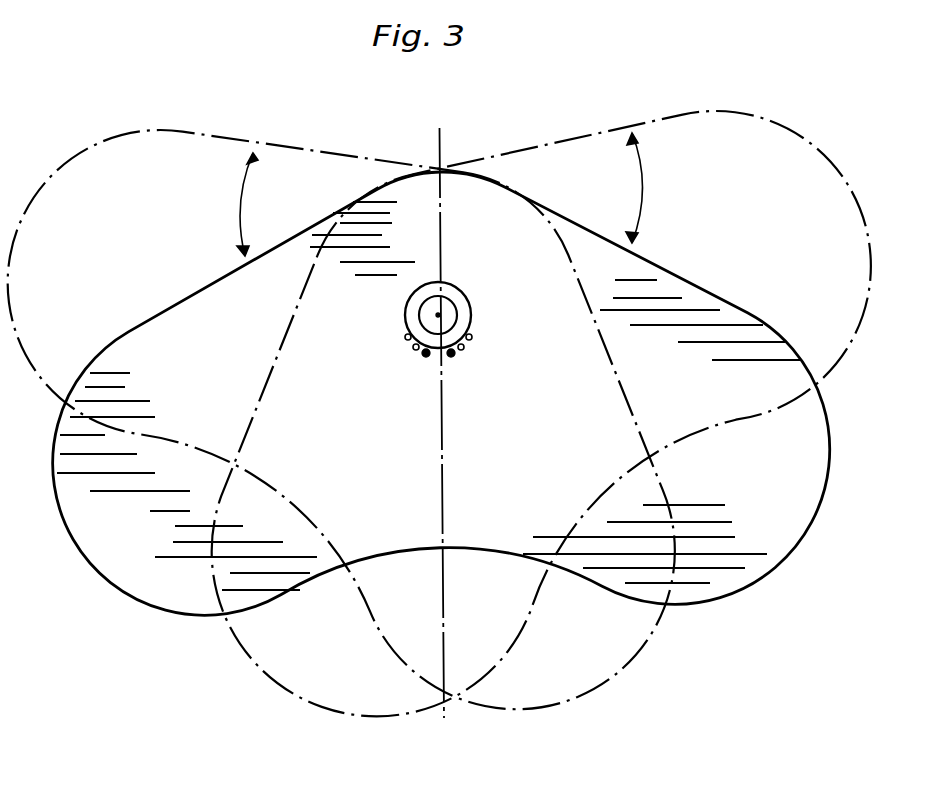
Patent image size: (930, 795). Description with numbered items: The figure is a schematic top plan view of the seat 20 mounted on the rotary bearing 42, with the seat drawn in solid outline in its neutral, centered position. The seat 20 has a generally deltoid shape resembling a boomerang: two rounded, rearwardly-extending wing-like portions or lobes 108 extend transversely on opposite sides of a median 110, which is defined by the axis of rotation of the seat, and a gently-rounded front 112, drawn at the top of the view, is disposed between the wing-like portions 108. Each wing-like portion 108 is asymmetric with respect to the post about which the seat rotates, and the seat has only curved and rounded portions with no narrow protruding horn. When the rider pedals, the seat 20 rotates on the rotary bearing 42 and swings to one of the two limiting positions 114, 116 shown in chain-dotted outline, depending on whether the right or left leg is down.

The seat 20 is at (688, 277).
The rotary bearing 42 is at (472, 305).
The wing-like portions 108 is at (117, 580).
The median 110 is at (445, 600).
The gently-rounded front 112 is at (377, 187).
The limiting position 114 is at (177, 130).
The limiting position 116 is at (542, 145).